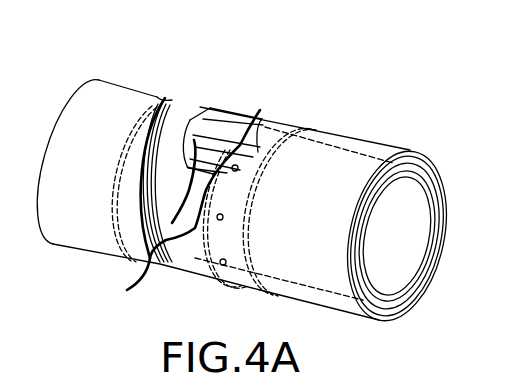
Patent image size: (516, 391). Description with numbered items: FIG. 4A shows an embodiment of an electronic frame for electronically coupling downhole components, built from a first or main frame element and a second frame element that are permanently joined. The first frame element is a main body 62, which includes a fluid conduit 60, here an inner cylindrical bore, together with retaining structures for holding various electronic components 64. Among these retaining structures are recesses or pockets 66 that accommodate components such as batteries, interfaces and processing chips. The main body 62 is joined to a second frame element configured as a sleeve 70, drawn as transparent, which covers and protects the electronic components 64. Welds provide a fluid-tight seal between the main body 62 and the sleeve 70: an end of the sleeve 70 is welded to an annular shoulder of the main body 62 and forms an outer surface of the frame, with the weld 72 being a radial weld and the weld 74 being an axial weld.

The fluid conduit 60 is at (398, 234).
The main body 62 is at (112, 93).
The electronic components 64 is at (241, 144).
The recesses or pockets 66 is at (194, 138).
The sleeve 70 is at (358, 131).
The weld 72 is at (172, 99).
The weld 74 is at (438, 170).